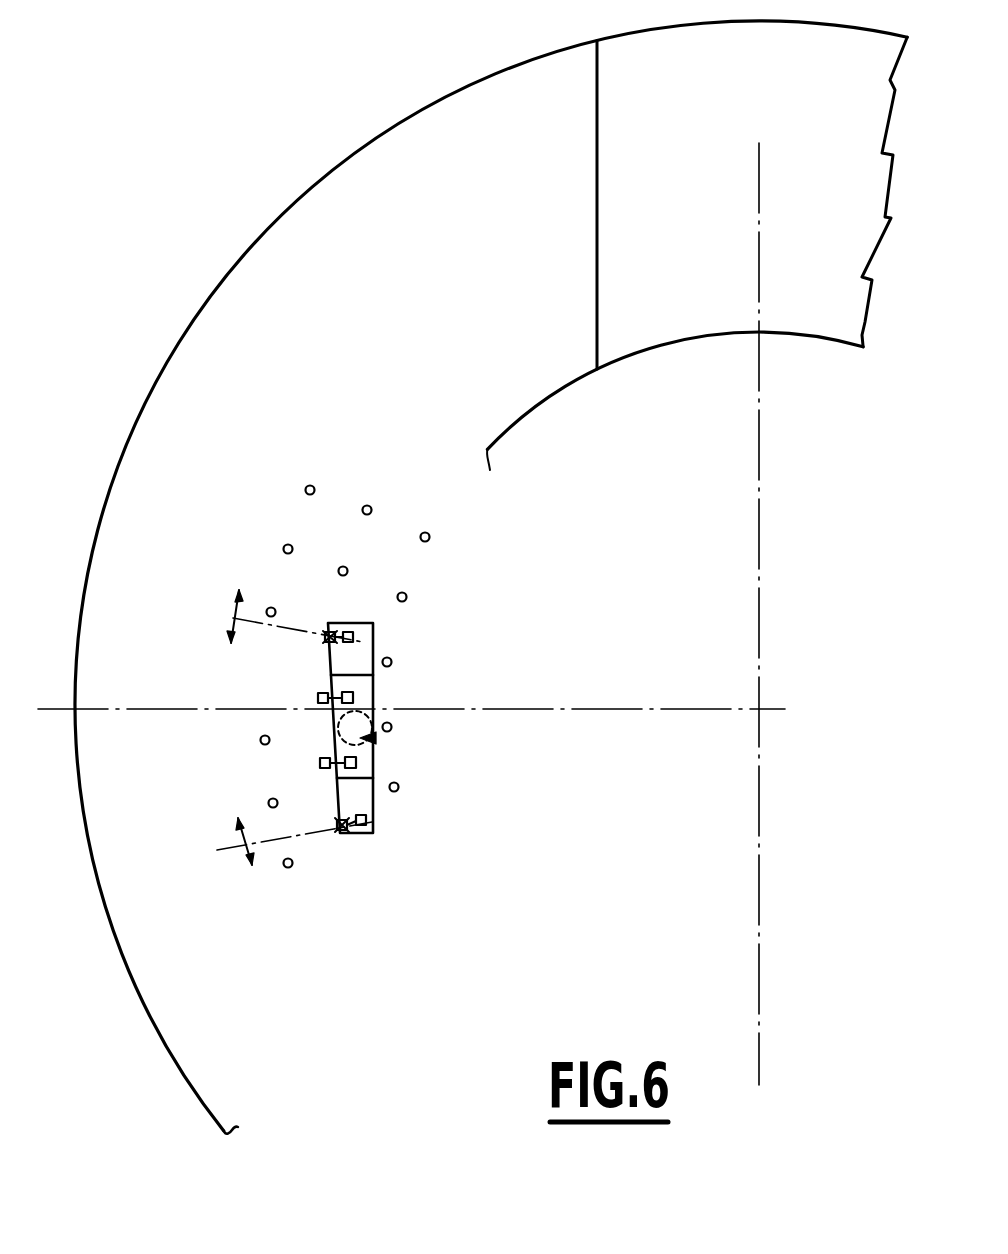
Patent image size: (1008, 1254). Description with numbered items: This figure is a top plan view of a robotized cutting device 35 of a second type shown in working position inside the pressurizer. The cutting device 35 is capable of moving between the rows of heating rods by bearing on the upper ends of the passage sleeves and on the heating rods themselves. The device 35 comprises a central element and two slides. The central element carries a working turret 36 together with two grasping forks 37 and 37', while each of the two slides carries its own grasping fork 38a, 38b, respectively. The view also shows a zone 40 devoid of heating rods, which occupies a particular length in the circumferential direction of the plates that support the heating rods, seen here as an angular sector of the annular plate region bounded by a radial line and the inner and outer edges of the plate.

The zone devoid of heating rods 40 is at (608, 193).
The working turret 36 is at (362, 713).
The robotized cutting device 35 is at (372, 738).
The grasping fork 37 is at (276, 688).
The grasping fork 37' is at (274, 774).
The grasping fork 38a is at (330, 632).
The grasping fork 38b is at (352, 837).